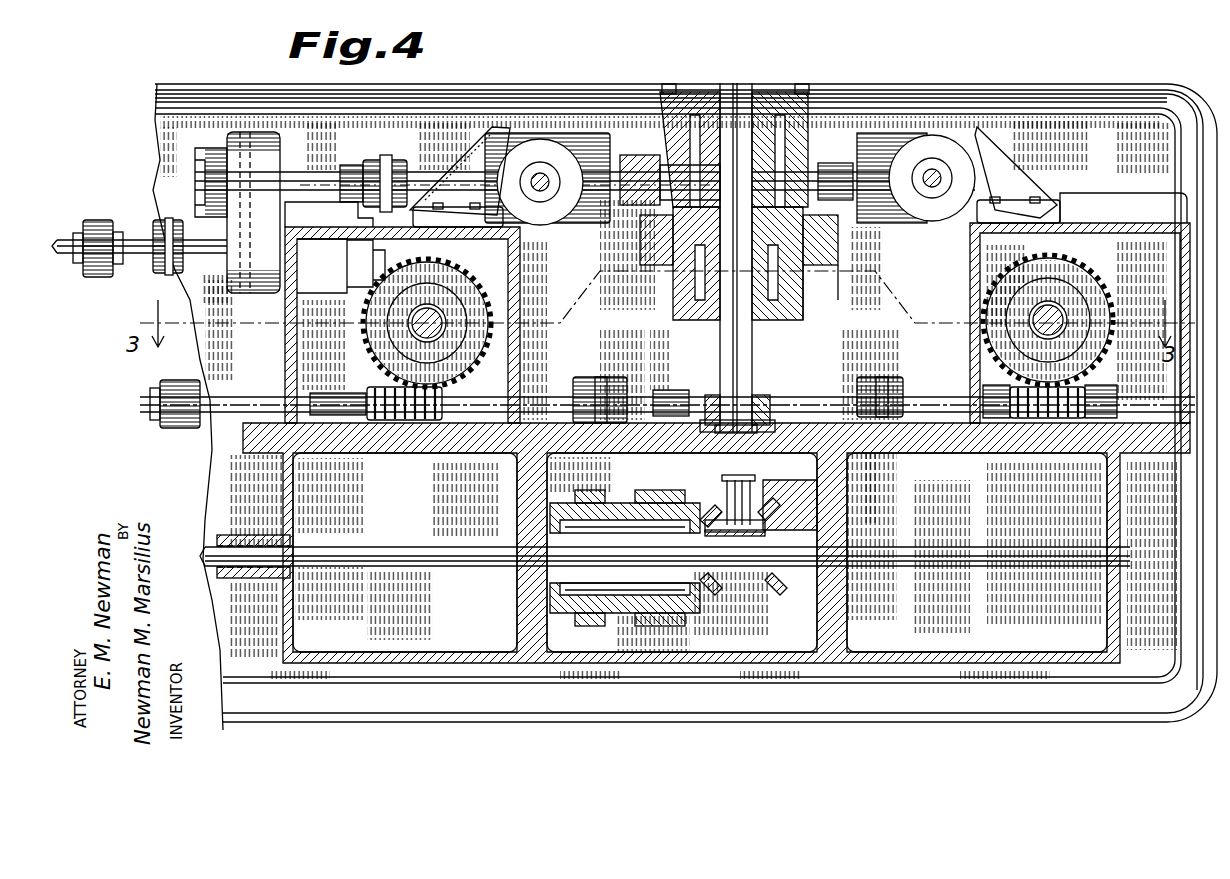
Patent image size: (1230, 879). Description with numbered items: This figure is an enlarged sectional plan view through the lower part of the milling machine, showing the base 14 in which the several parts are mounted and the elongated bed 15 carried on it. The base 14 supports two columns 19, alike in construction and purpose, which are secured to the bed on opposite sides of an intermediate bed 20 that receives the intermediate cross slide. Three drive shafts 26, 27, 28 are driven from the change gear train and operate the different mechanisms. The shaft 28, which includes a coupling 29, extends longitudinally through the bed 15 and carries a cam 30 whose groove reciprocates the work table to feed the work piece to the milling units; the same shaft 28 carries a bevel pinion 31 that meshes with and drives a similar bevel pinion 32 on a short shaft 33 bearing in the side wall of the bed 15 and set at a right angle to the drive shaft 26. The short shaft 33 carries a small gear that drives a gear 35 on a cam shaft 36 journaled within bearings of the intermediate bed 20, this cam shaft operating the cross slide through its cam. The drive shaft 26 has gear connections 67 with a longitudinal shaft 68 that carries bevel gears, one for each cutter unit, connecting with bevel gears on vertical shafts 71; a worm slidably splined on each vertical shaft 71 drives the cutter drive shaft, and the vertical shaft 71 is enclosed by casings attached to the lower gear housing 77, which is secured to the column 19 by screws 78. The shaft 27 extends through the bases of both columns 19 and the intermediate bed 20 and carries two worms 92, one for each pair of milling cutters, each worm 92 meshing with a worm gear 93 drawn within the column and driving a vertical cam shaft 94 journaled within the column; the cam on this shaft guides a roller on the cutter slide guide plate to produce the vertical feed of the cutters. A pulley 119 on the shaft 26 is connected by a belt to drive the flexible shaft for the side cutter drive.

The base 14 is at (645, 105).
The bed 15 is at (400, 508).
The column 19 is at (335, 390).
The intermediate bed 20 is at (818, 232).
The drive shaft 26 is at (66, 238).
The drive shaft 27 is at (240, 402).
The drive shaft 28 is at (208, 548).
The coupling 29 is at (248, 535).
The cam 30 is at (640, 503).
The bevel pinion 31 is at (780, 580).
The bevel pinion 32 is at (770, 482).
The short shaft 33 is at (728, 497).
The gear 35 is at (768, 398).
The cam shaft 36 is at (720, 348).
The gear connections 67 is at (457, 212).
The longitudinal shaft 68 is at (348, 178).
The vertical shaft 71 is at (545, 178).
The lower gear housing 77 is at (515, 160).
The screws 78 is at (478, 212).
The worm 92 is at (420, 388).
The worm gear 93 is at (400, 312).
The vertical cam shaft 94 is at (432, 318).
The pulley 119 is at (160, 218).